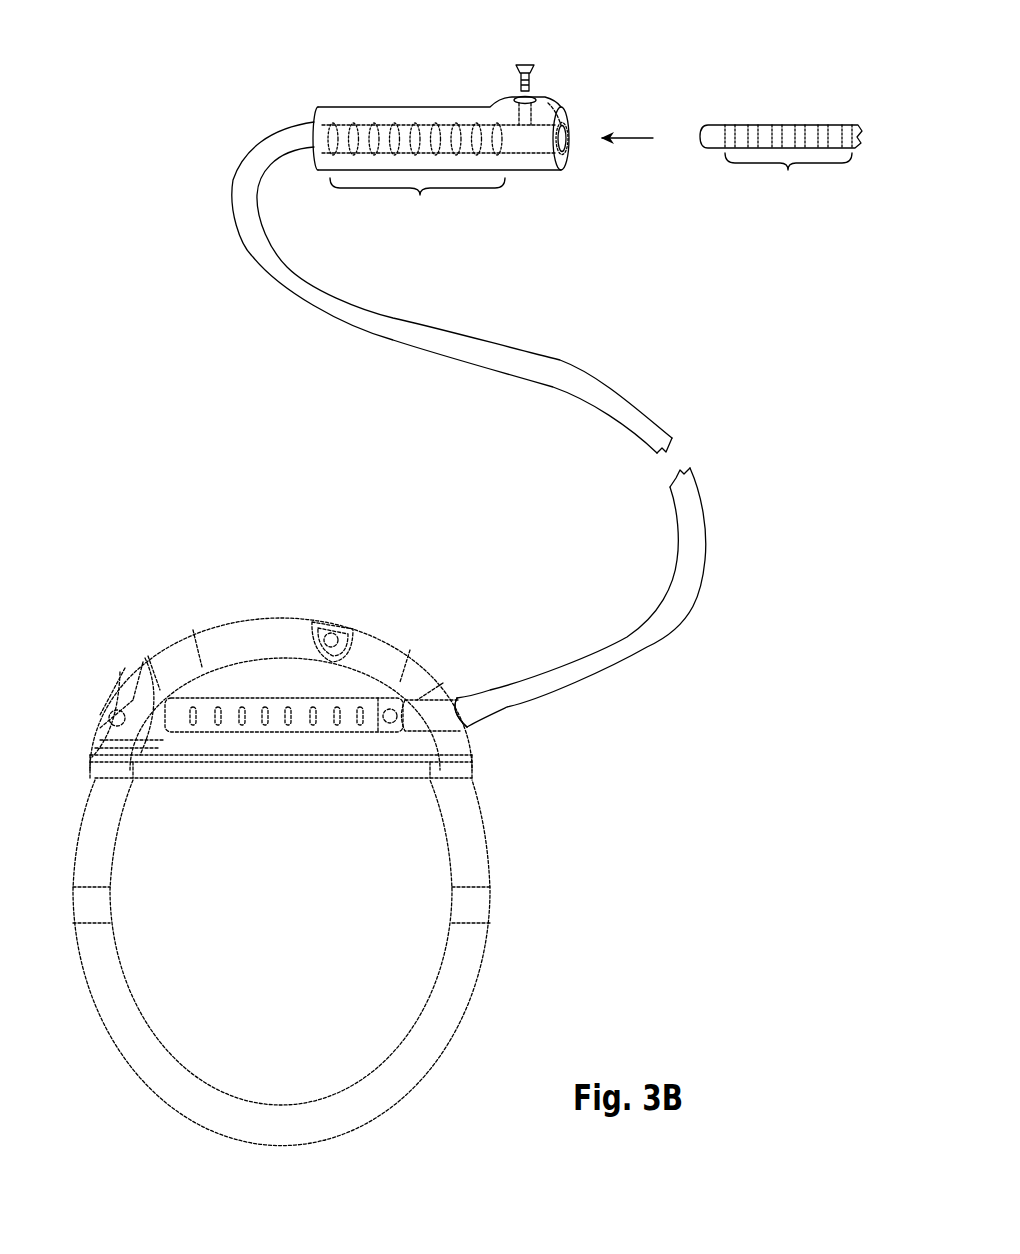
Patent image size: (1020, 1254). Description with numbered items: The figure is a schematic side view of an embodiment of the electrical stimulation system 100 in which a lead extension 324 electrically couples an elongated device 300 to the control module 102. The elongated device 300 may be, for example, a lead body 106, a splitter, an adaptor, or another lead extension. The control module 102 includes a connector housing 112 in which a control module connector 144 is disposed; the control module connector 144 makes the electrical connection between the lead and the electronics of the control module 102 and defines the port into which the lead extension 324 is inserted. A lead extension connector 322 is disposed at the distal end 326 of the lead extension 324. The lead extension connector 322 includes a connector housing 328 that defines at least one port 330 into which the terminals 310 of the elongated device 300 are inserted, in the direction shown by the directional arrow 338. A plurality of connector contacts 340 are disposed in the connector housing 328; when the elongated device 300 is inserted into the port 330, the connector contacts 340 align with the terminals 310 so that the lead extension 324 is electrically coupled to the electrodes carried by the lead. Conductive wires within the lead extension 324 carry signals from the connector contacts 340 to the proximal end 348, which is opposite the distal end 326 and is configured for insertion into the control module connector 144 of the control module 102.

The electrical stimulation system 100 is at (390, 707).
The control module 102 is at (538, 911).
The lead body 106 is at (784, 125).
The connector housing 112 is at (373, 645).
The control module connector 144 is at (236, 695).
The elongated device 300 is at (781, 103).
The terminals 310 is at (788, 172).
The lead extension connector 322 is at (405, 107).
The lead extension 324 is at (552, 357).
The distal end 326 is at (448, 114).
The connector housing 328 is at (358, 118).
The port 330 is at (580, 157).
The directional arrow 338 is at (632, 137).
The connector contacts 340 is at (417, 201).
The proximal end 348 is at (475, 680).